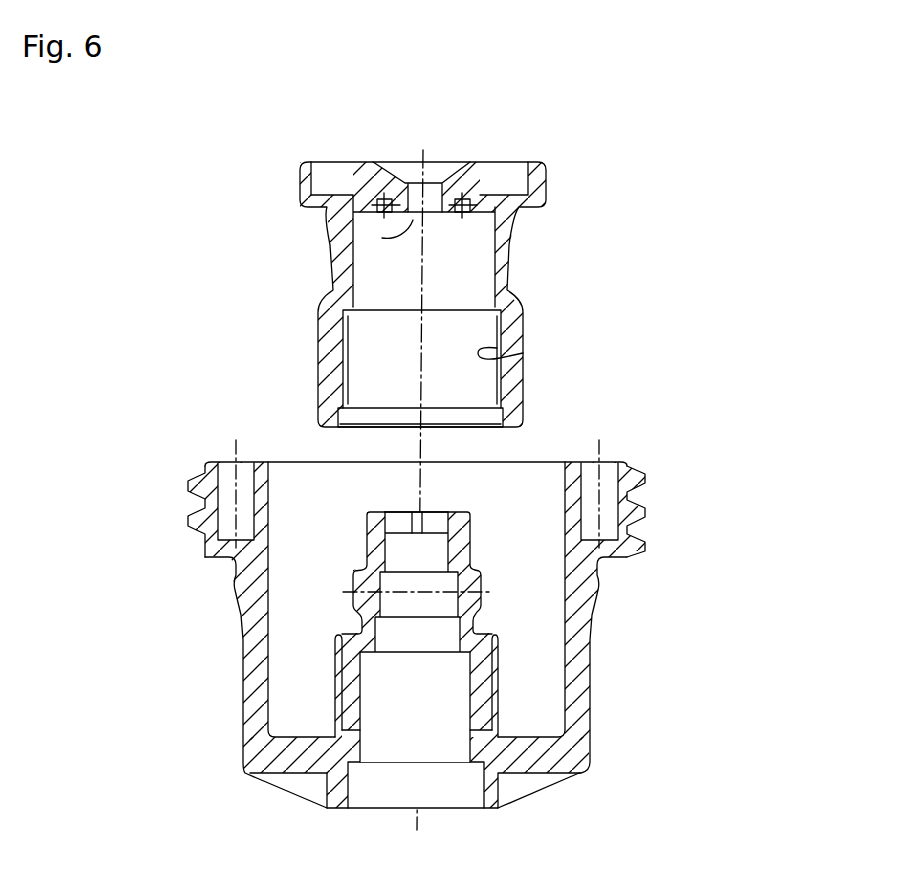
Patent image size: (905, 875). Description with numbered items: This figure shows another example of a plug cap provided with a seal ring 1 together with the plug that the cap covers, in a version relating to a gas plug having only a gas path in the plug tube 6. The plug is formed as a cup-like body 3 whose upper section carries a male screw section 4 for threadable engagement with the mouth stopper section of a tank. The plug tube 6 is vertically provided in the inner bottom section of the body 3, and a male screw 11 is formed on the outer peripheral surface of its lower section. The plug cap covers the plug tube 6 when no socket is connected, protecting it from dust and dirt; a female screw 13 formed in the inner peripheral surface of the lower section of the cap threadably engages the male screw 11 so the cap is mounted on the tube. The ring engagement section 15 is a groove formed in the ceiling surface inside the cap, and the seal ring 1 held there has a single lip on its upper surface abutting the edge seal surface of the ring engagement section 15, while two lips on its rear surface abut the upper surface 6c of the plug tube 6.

The seal ring 1 is at (464, 212).
The ring engagement section 15 is at (467, 183).
The female screw 13 is at (523, 353).
The body 3 is at (590, 712).
The male screw section 4 is at (646, 521).
The male screw 11 is at (498, 660).
The plug tube 6 is at (477, 520).
The upper surface of the plug tube 6c is at (383, 510).